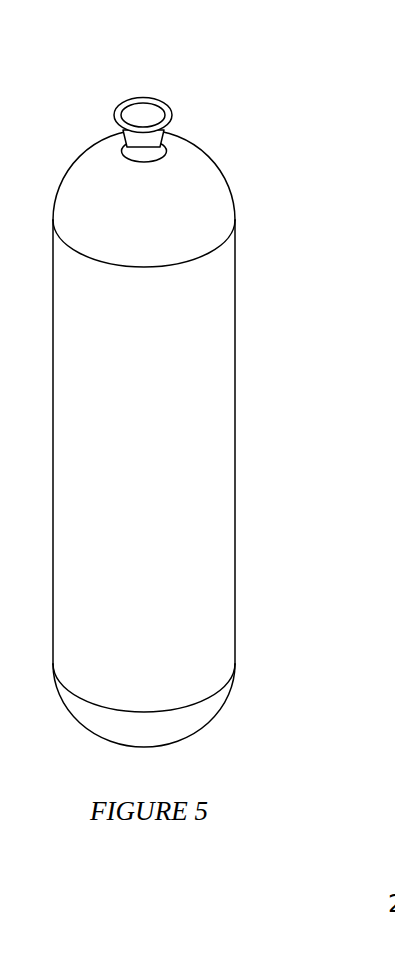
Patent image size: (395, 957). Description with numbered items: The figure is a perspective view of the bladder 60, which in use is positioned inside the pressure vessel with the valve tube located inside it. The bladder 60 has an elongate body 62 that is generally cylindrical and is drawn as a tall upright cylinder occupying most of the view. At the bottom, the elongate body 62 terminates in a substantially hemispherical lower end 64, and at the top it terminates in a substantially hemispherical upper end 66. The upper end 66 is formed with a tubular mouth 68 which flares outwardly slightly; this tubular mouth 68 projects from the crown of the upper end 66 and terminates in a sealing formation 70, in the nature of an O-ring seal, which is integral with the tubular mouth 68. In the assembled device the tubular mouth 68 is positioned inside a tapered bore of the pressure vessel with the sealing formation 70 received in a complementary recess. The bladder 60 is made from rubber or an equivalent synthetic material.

The bladder 60 is at (224, 466).
The elongate body 62 is at (238, 583).
The lower end 64 is at (203, 727).
The upper end 66 is at (222, 165).
The tubular mouth 68 is at (165, 147).
The sealing formation 70 is at (170, 108).